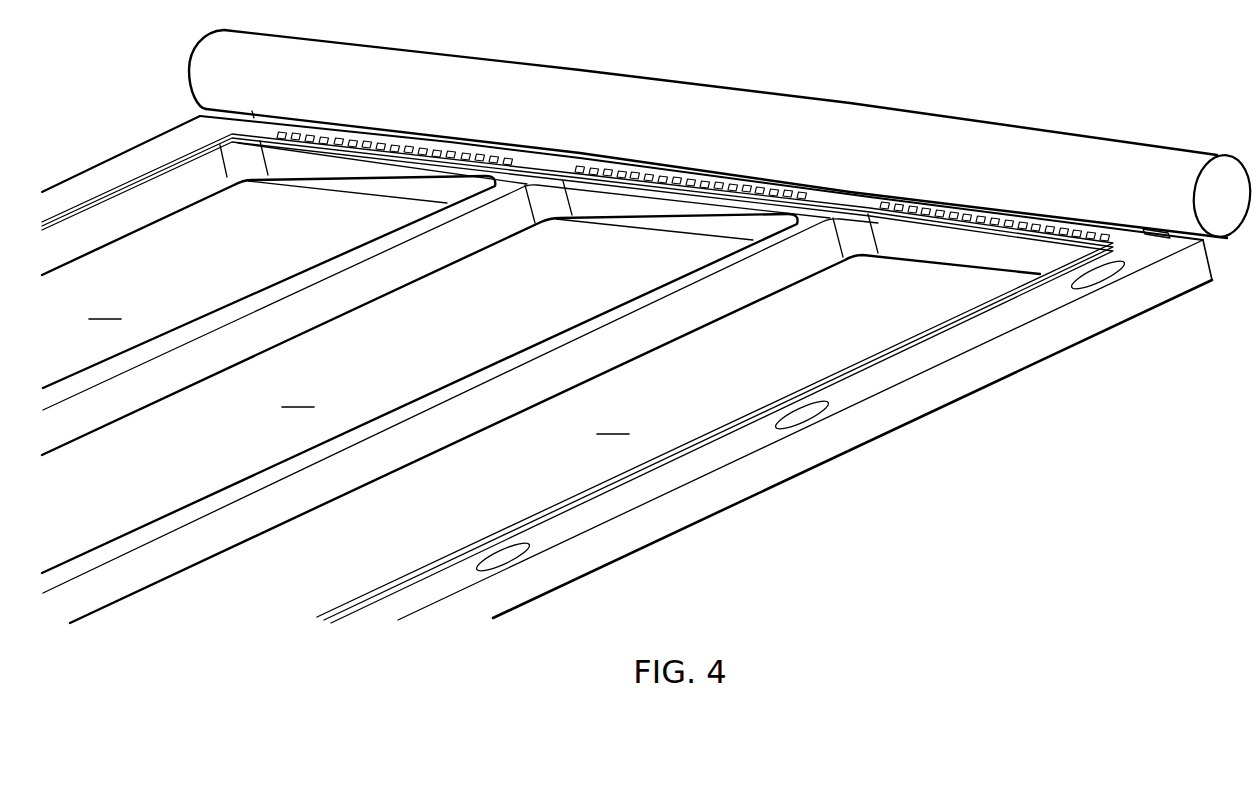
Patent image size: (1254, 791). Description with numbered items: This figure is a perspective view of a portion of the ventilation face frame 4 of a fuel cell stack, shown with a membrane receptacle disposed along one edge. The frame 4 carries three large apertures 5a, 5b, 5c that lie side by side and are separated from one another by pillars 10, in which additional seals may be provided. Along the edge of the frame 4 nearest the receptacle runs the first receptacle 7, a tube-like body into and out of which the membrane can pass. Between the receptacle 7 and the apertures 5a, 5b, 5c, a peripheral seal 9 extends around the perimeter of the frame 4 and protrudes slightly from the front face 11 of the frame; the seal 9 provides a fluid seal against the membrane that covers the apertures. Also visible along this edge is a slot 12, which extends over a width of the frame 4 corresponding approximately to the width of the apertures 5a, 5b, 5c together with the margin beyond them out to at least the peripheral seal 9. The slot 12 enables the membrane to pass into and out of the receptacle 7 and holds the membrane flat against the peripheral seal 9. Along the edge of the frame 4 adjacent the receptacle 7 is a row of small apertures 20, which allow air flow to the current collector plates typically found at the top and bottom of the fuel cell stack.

The frame 4 is at (987, 373).
The aperture 5a is at (555, 418).
The aperture 5b is at (420, 377).
The aperture 5c is at (268, 264).
The first receptacle 7 is at (1120, 160).
The peripheral seal 9 is at (107, 197).
The pillars 10 is at (253, 300).
The front face 11 is at (430, 587).
The slot 12 is at (1136, 230).
The apertures 20 is at (667, 190).